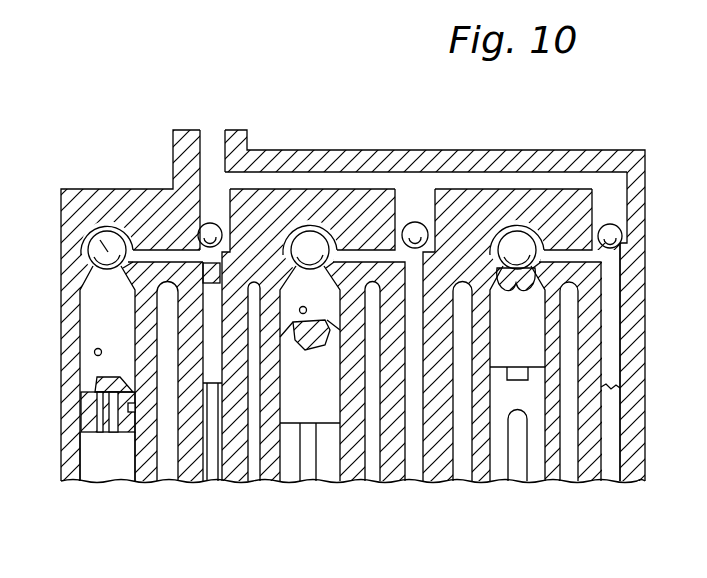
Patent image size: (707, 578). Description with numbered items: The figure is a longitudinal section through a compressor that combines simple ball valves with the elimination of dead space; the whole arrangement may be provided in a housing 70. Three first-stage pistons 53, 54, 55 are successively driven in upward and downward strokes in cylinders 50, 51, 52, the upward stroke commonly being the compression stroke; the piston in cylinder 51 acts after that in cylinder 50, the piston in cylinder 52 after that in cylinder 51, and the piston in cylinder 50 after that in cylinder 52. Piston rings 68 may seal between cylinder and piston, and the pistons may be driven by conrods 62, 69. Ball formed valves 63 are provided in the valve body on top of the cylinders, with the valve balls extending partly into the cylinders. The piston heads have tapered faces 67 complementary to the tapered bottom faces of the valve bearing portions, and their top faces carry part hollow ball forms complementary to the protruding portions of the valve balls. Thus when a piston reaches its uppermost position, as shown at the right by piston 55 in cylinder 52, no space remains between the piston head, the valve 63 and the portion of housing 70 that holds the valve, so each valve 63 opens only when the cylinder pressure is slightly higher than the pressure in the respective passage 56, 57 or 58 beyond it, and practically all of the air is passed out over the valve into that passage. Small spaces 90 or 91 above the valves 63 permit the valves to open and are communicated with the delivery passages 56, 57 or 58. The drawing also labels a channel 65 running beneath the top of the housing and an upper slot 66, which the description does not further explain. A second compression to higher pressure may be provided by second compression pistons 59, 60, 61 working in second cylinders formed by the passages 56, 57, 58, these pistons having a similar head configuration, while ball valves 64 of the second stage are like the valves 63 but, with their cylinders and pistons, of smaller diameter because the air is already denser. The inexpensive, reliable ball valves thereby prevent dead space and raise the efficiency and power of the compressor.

The cylinder 50 is at (141, 365).
The cylinder 51 is at (308, 323).
The cylinder 52 is at (515, 283).
The piston 53 is at (103, 462).
The piston 54 is at (312, 370).
The piston 55 is at (520, 355).
The passage 56 is at (212, 258).
The passage 57 is at (412, 258).
The passage 58 is at (613, 287).
The second compression piston 59 is at (207, 347).
The second compression piston 60 is at (410, 362).
The second compression piston 61 is at (612, 463).
The conrod 62 is at (213, 462).
The ball formed valve 63 is at (100, 247).
The ball valve 64 is at (212, 230).
The distribution channel 65 is at (328, 182).
The inlet slot 66 is at (212, 136).
The tapered face 67 is at (93, 390).
The piston ring 68 is at (82, 408).
The conrod 69 is at (308, 465).
The housing 70 is at (62, 272).
The small space 90 is at (100, 253).
The small space 91 is at (205, 214).